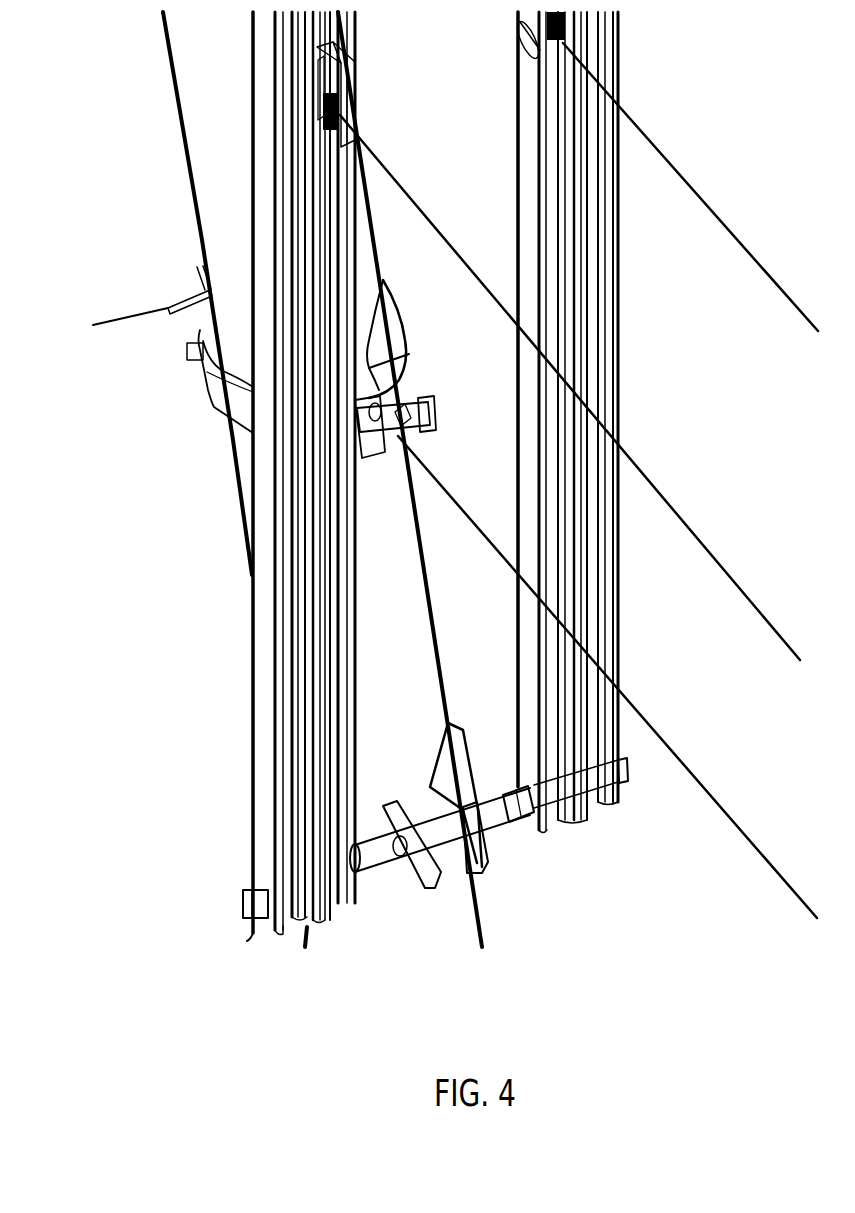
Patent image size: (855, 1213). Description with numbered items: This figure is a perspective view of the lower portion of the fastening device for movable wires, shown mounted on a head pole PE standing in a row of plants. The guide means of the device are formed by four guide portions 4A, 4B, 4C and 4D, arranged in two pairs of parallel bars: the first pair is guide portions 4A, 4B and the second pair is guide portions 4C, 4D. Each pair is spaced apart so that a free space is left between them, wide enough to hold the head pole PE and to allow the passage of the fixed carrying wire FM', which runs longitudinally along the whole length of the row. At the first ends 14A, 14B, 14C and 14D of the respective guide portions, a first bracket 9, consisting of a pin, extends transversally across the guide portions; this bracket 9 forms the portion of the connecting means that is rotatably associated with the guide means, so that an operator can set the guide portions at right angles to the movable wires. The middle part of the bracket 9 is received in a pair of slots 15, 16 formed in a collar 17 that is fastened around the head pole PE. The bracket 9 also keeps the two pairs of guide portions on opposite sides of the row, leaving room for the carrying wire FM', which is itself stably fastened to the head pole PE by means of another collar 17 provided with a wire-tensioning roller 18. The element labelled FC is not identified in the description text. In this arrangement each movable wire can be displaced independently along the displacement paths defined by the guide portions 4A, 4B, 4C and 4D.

The guide portion 4A is at (267, 78).
The guide portion 4B is at (623, 78).
The guide portion 4C is at (356, 65).
The guide portion 4D is at (520, 100).
The fixed connection FC is at (128, 316).
The head pole PE is at (233, 473).
The collar 17 is at (410, 348).
The wire-tensioning roller 18 is at (400, 395).
The slot 16 is at (457, 867).
The slot 15 is at (427, 873).
The first end of guide portion 14A is at (273, 930).
The first end of guide portion 14B is at (617, 803).
The first end of guide portion 14C is at (340, 907).
The first end of guide portion 14D is at (550, 837).
The first bracket 9 is at (242, 898).
The carrying wire FM' is at (607, 677).